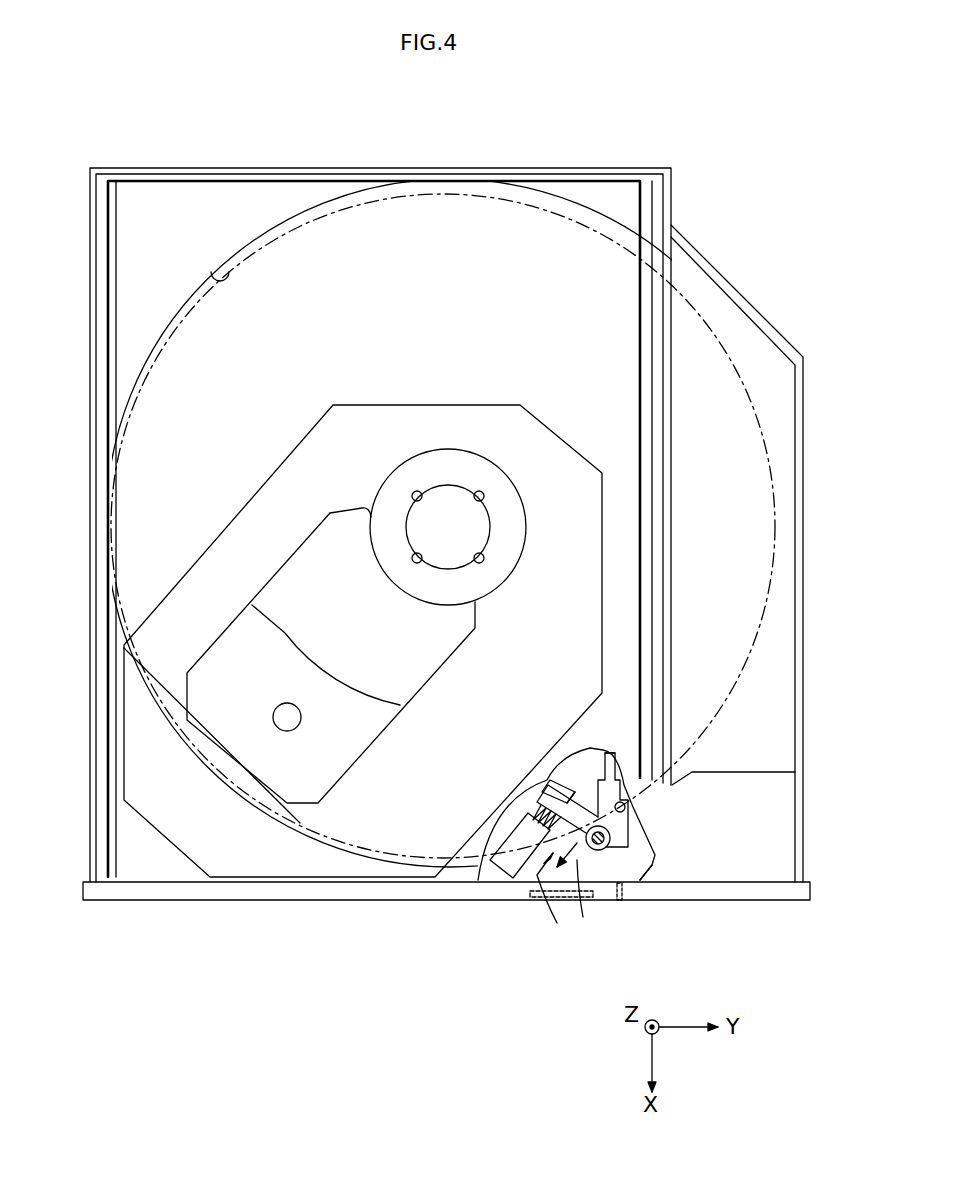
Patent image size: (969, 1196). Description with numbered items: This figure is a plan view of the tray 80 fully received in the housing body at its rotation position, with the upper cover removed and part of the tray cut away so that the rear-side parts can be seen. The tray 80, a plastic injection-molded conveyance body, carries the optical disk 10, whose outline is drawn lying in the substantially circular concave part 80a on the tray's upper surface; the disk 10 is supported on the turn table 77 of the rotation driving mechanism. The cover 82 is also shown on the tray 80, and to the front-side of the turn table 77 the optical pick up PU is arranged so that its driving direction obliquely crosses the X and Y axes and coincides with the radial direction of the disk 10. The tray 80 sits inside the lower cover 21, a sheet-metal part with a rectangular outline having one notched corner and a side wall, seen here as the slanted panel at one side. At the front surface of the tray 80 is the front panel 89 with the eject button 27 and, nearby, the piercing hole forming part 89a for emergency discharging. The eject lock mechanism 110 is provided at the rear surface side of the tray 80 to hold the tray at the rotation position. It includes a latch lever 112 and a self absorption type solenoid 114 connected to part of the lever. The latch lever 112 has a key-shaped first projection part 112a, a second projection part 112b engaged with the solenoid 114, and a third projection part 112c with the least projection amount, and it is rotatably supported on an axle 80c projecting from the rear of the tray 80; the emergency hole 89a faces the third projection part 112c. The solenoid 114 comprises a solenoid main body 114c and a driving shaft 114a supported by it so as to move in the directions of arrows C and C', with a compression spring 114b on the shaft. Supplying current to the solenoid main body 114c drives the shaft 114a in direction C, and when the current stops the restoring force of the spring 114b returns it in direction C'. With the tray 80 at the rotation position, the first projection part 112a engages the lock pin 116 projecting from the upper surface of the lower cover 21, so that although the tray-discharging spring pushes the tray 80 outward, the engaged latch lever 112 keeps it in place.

The optical disk 10 is at (692, 298).
The lower cover 21 is at (758, 318).
The eject button 27 is at (535, 900).
The turn table 77 is at (368, 534).
The tray 80 is at (620, 424).
The concave part 80a is at (227, 270).
The axle 80c is at (638, 884).
The cover 82 is at (355, 828).
The front panel 89 is at (205, 903).
The piercing hole forming part for emergency discharging 89a is at (622, 902).
The eject lock mechanism 110 is at (630, 768).
The latch lever 112 is at (634, 837).
The first projection part 112a is at (607, 753).
The second projection part 112b is at (545, 787).
The third projection part 112c is at (603, 846).
The solenoid 114 is at (488, 799).
The driving shaft 114a is at (570, 795).
The compression spring 114b is at (542, 808).
The solenoid main body 114c is at (496, 834).
The lock pin 116 is at (640, 807).
The optical pick up PU is at (220, 717).
The arrow C is at (580, 892).
The arrow C' is at (553, 900).